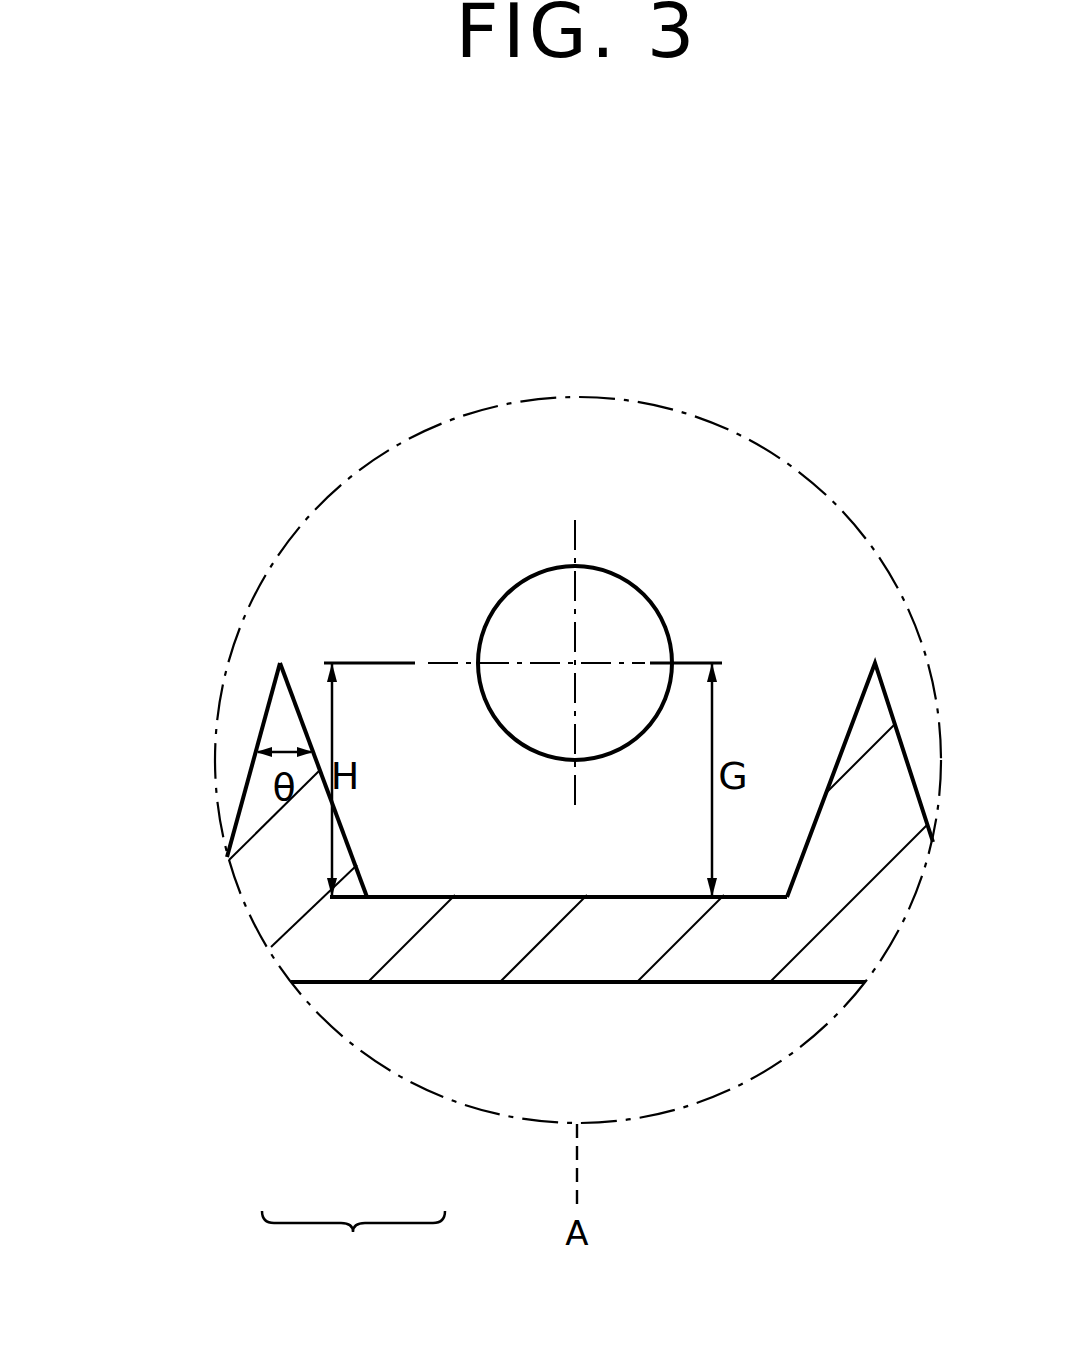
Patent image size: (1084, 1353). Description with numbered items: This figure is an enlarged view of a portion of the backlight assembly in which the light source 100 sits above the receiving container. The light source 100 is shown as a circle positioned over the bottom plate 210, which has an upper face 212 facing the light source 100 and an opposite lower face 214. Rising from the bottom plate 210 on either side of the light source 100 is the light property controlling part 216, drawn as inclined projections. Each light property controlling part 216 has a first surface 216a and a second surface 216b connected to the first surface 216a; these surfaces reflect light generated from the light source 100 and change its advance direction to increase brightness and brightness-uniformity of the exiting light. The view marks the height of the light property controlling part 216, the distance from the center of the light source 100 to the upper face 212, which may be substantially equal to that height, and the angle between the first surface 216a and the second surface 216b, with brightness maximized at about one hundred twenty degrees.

The light source 100 is at (648, 578).
The bottom plate 210 is at (353, 1251).
The upper face 212 is at (418, 872).
The lower face 214 is at (345, 985).
The light property controlling part 216 is at (232, 778).
The first surface 216a is at (258, 737).
The second surface 216b is at (344, 830).